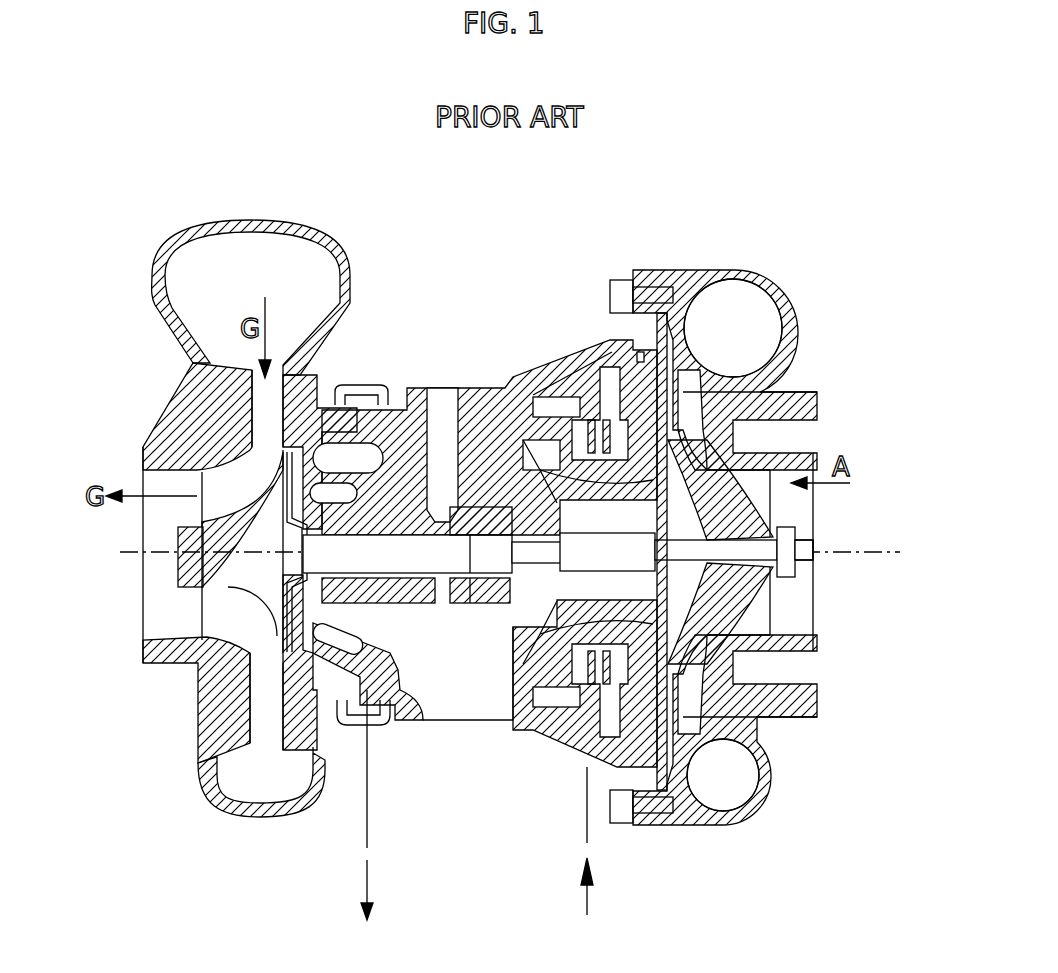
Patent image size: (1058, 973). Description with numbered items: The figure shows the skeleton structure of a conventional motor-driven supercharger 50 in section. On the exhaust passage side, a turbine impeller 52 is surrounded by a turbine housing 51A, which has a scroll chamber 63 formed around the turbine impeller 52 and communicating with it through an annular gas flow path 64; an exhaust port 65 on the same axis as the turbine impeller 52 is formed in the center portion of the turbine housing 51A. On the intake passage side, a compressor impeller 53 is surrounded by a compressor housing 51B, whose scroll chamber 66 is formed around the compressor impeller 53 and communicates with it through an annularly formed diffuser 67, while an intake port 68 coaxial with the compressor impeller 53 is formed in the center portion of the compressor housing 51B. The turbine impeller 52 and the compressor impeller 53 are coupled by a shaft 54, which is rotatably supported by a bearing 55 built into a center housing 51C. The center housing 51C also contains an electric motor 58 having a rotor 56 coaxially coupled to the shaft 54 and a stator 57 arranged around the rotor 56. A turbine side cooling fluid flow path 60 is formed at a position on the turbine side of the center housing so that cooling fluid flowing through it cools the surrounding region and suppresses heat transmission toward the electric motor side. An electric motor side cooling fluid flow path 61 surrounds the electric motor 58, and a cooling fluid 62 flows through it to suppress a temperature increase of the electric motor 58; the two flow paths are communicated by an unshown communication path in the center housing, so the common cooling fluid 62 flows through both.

The motor-driven supercharger 50 is at (487, 238).
The turbine housing 51A is at (200, 383).
The compressor housing 51B is at (797, 324).
The center housing 51C is at (500, 400).
The turbine impeller 52 is at (200, 528).
The compressor impeller 53 is at (740, 520).
The shaft 54 is at (417, 557).
The bearing 55 is at (510, 575).
The rotor 56 is at (700, 585).
The stator 57 is at (665, 625).
The electric motor 58 is at (870, 585).
The turbine side cooling fluid flow path 60 is at (380, 398).
The electric motor side cooling fluid flow path 61 is at (612, 405).
The cooling fluid 62 is at (455, 810).
The scroll chamber 63 is at (242, 289).
The annular gas flow path 64 is at (267, 423).
The exhaust port 65 is at (158, 623).
The scroll chamber 66 is at (767, 350).
The diffuser 67 is at (680, 392).
The intake port 68 is at (815, 530).